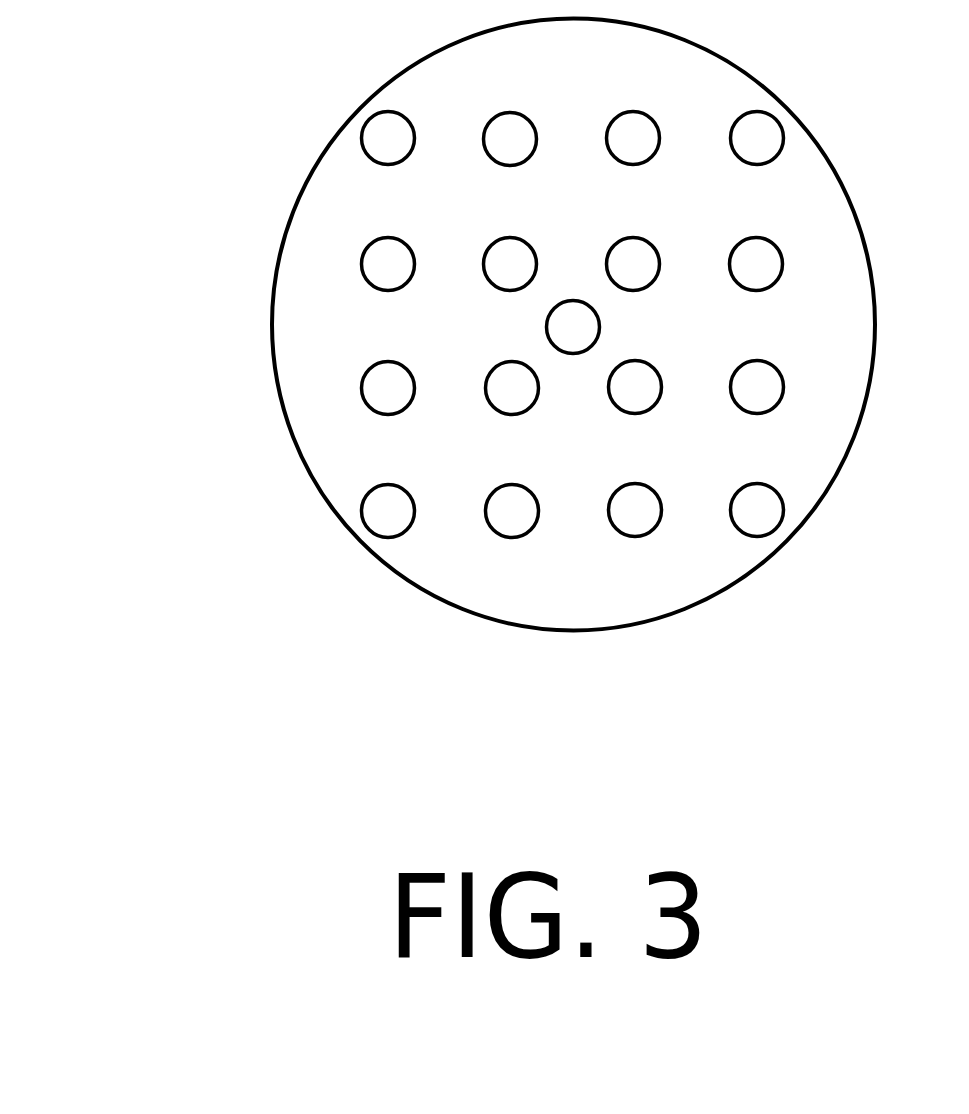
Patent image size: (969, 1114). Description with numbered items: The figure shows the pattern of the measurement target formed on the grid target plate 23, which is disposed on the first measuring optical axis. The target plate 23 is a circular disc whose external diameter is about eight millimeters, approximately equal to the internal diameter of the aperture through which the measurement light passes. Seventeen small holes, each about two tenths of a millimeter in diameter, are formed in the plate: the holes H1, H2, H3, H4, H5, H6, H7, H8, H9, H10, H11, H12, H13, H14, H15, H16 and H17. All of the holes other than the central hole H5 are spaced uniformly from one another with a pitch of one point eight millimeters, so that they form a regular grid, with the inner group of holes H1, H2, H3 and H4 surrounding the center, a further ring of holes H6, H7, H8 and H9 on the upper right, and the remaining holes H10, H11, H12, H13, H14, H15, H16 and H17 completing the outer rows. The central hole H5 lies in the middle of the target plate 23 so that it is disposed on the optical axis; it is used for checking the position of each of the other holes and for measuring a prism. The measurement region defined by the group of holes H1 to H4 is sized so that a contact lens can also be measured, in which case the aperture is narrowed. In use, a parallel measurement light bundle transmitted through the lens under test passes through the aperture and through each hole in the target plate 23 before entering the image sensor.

The target plate 23 is at (277, 267).
The hole H1 is at (510, 264).
The hole H2 is at (633, 264).
The hole H3 is at (512, 388).
The hole H4 is at (635, 387).
The central hole H5 is at (573, 327).
The hole H6 is at (510, 139).
The hole H7 is at (633, 138).
The hole H8 is at (757, 138).
The hole H9 is at (756, 264).
The hole H10 is at (757, 387).
The hole H11 is at (757, 510).
The hole H12 is at (635, 510).
The hole H13 is at (512, 511).
The hole H14 is at (388, 511).
The hole H15 is at (388, 388).
The hole H16 is at (388, 264).
The hole H17 is at (388, 138).